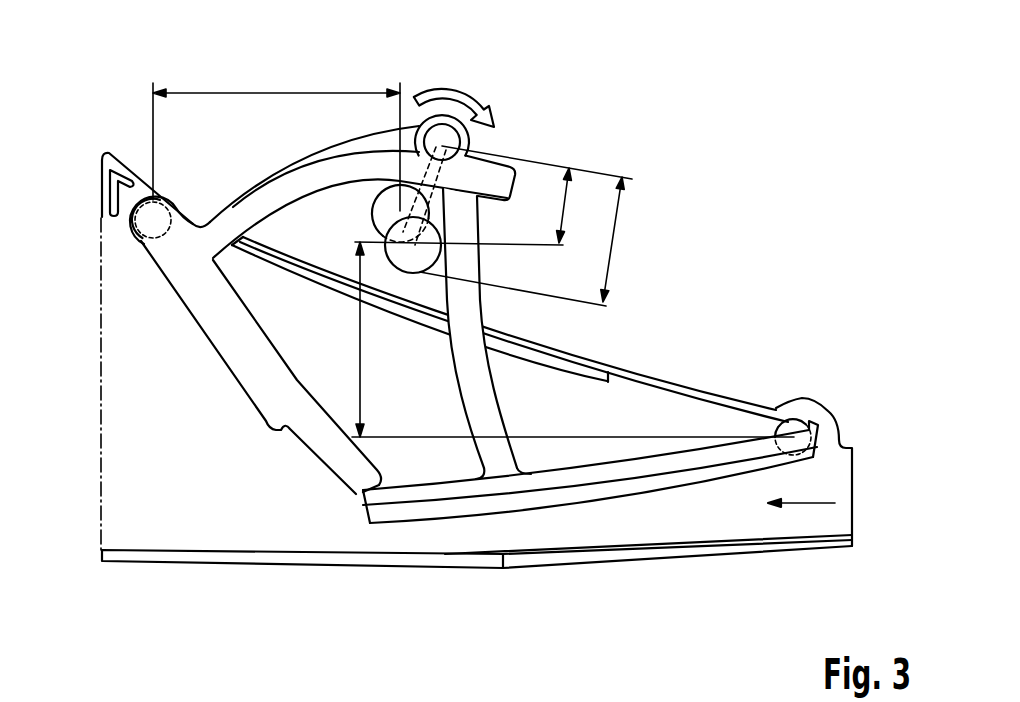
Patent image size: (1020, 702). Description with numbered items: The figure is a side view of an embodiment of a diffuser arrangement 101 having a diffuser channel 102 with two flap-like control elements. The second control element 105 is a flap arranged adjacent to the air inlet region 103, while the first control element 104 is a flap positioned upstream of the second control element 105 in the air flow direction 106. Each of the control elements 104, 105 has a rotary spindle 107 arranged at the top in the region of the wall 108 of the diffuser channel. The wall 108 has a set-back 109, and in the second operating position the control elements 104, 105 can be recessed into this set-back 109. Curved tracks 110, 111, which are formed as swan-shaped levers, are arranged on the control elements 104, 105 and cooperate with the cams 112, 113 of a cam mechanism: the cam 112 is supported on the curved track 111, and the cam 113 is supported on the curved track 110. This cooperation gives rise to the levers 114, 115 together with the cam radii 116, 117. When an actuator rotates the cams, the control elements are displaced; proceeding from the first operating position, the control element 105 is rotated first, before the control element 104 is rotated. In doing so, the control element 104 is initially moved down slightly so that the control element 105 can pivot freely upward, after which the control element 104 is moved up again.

The diffuser arrangement 101 is at (762, 192).
The diffuser channel 102 is at (187, 505).
The air inlet region 103 is at (818, 478).
The first control element 104 is at (615, 494).
The second control element 105 is at (246, 378).
The air flow direction 106 is at (800, 506).
The rotary spindle 107 is at (136, 213).
The wall 108 is at (657, 386).
The set-back 109 is at (737, 398).
The curved track 110 is at (240, 200).
The curved track 111 is at (470, 305).
The cam 112 is at (432, 247).
The cam 113 is at (373, 203).
The lever 114 is at (268, 90).
The lever 115 is at (355, 343).
The cam radius 116 is at (617, 229).
The cam radius 117 is at (582, 190).